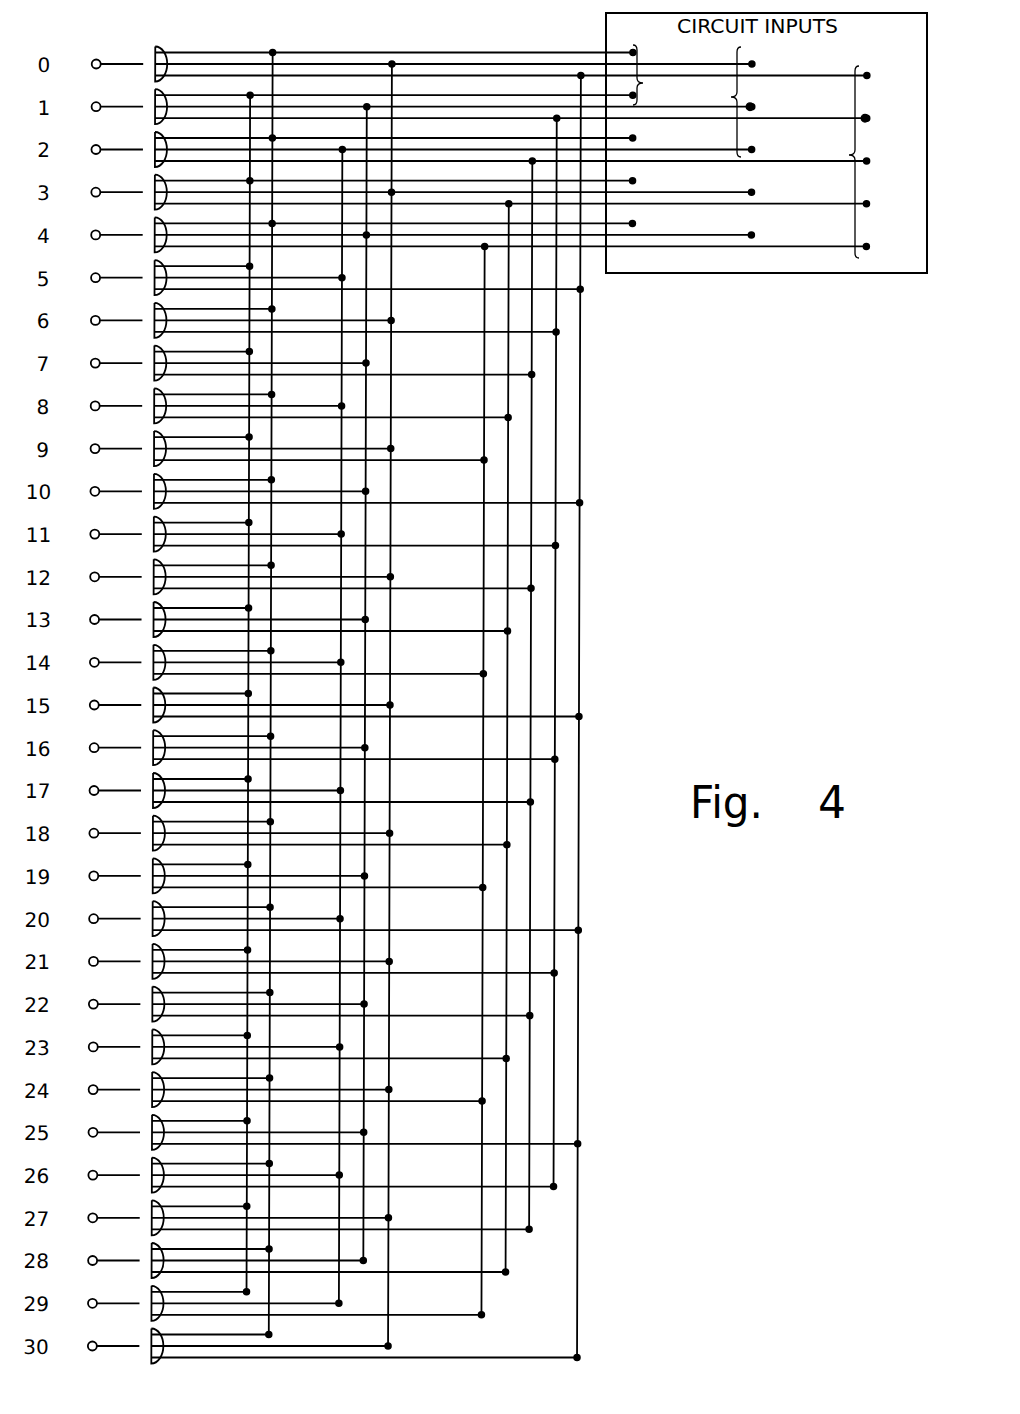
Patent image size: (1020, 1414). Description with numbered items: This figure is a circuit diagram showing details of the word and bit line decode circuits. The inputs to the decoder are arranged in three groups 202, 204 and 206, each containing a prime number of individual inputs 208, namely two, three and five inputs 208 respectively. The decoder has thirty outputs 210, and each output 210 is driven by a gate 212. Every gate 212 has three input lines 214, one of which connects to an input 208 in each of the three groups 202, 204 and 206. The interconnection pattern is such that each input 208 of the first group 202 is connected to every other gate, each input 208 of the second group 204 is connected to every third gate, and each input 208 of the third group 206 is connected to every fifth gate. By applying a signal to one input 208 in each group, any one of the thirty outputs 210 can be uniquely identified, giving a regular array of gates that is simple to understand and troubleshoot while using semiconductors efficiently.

The first group of inputs 202 is at (643, 83).
The second group of inputs 204 is at (731, 97).
The third group of inputs 206 is at (849, 155).
The individual input 208 is at (861, 116).
The output 210 is at (90, 107).
The gate 212 is at (155, 106).
The input line 214 is at (223, 45).